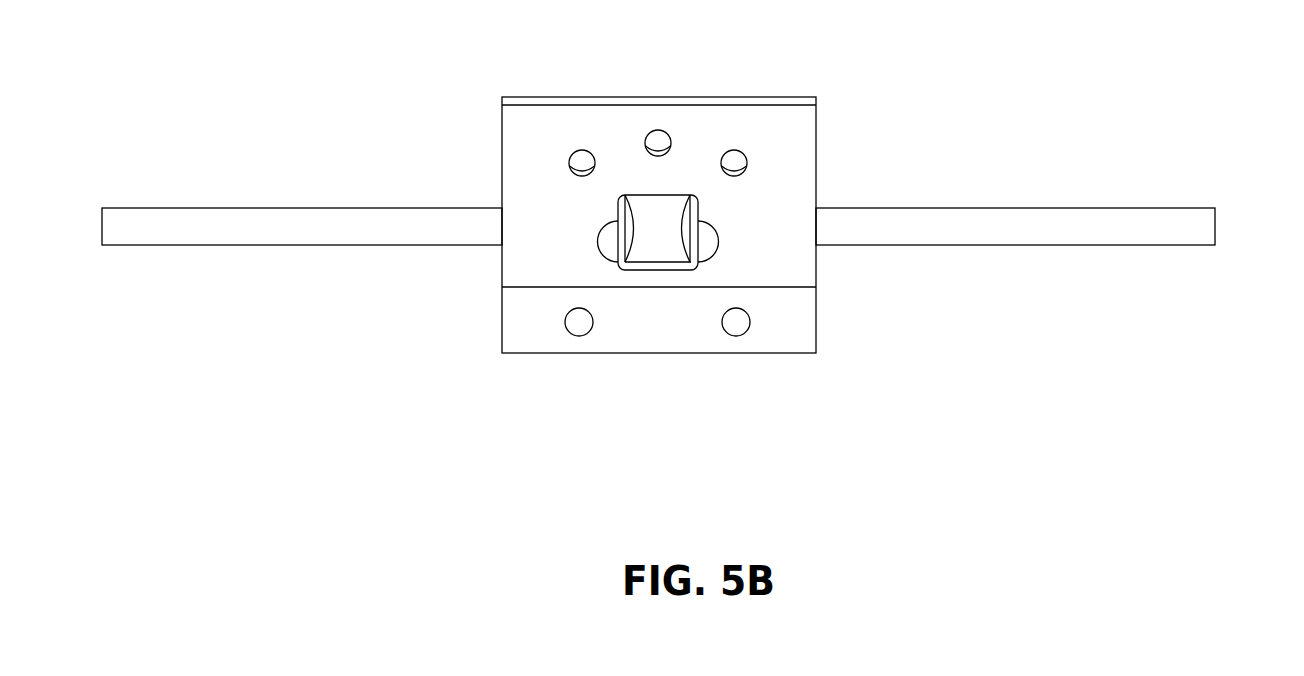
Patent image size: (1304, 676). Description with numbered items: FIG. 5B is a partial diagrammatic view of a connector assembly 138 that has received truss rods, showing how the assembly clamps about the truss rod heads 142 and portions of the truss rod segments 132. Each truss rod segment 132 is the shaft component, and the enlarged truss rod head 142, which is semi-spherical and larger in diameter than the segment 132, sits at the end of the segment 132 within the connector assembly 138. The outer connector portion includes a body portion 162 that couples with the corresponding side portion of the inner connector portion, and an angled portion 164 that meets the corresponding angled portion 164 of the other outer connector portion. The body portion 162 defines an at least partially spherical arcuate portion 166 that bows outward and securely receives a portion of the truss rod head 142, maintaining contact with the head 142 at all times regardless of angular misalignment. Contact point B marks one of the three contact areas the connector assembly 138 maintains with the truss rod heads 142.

The segment 132 is at (133, 215).
The connector assembly 138 is at (687, 77).
The truss rod head 142 is at (635, 227).
The body portion 162 is at (797, 155).
The angled portion 164 is at (793, 343).
The at least partially spherical arcuate portion 166 is at (615, 233).
The contact point B is at (704, 237).